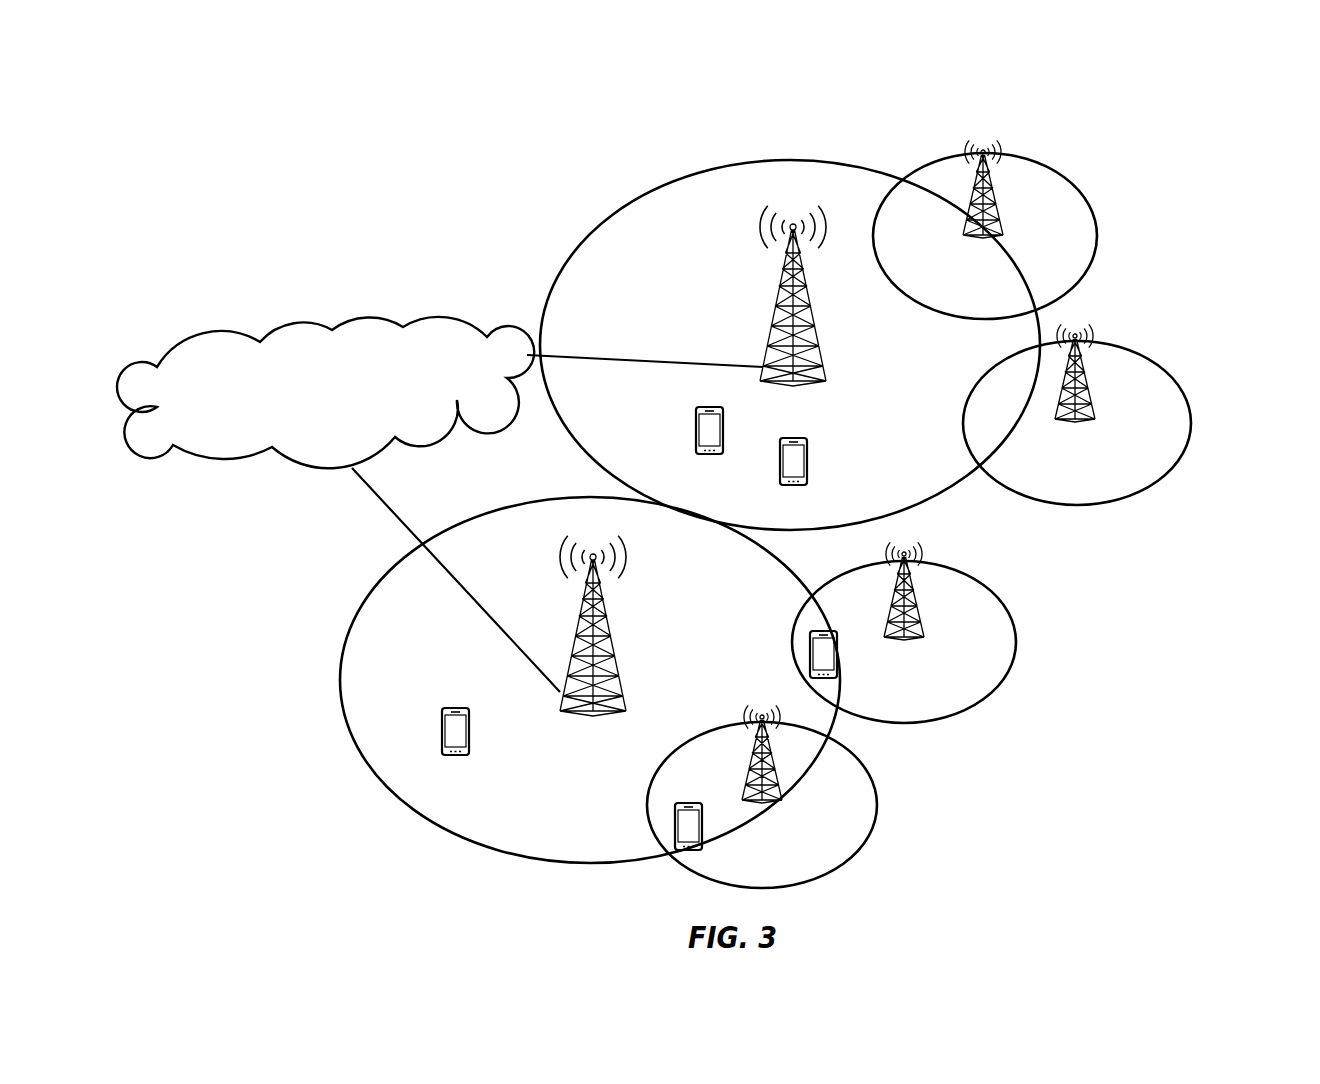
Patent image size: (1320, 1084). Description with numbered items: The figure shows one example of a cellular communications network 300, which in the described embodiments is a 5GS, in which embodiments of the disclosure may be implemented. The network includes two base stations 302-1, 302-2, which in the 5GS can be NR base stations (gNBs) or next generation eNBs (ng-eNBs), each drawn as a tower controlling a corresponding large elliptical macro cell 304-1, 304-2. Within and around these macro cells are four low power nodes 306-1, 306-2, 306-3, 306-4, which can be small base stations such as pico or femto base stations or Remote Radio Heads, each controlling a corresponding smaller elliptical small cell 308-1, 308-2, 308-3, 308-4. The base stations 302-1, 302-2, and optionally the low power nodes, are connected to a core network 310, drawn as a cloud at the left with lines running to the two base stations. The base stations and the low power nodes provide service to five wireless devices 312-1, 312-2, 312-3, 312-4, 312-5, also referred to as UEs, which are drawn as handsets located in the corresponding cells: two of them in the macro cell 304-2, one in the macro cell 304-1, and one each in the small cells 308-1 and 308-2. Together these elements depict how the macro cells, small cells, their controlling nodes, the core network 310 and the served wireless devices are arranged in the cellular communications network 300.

The cellular communications network 300 is at (1168, 123).
The base station 302-1 is at (612, 642).
The base station 302-2 is at (798, 320).
The macro cell 304-1 is at (457, 838).
The macro cell 304-2 is at (797, 159).
The low power node 306-1 is at (777, 787).
The low power node 306-2 is at (918, 620).
The low power node 306-3 is at (1092, 408).
The low power node 306-4 is at (1000, 217).
The small cell 308-1 is at (878, 807).
The small cell 308-2 is at (1016, 652).
The small cell 308-3 is at (1190, 430).
The small cell 308-4 is at (1098, 227).
The core network 310 is at (306, 434).
The wireless device 312-1 is at (713, 782).
The wireless device 312-2 is at (823, 630).
The wireless device 312-3 is at (468, 730).
The wireless device 312-4 is at (722, 437).
The wireless device 312-5 is at (806, 465).